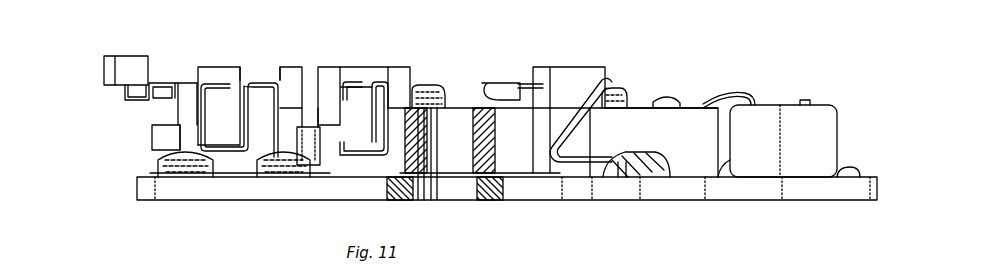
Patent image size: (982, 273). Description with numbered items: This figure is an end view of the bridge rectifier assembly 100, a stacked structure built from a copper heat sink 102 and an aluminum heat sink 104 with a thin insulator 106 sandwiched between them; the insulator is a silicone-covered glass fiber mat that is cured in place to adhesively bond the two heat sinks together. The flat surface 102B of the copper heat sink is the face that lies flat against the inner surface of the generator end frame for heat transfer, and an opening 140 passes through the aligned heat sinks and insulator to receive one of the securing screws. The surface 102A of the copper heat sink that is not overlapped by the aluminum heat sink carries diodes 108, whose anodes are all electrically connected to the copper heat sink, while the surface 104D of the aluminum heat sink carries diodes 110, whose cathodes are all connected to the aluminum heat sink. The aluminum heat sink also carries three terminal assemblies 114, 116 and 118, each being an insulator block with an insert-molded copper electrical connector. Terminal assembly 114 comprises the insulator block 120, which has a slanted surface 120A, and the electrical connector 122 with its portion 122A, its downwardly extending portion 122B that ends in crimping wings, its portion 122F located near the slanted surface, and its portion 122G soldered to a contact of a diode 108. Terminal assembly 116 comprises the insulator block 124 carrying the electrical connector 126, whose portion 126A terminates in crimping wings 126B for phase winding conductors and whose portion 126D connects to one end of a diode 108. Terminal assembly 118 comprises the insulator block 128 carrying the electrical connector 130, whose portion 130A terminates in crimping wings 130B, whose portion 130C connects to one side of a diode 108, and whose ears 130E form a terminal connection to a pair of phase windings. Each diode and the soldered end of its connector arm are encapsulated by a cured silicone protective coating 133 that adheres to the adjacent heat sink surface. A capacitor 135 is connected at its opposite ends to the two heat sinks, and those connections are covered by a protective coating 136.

The bridge rectifier assembly 100 is at (528, 204).
The copper heat sink 102 is at (818, 190).
The surface of copper heat sink 102A is at (733, 157).
The flat surface of copper heat sink 102B is at (735, 202).
The aluminum heat sink 104 is at (440, 126).
The surface of aluminum heat sink 104D is at (478, 130).
The thin insulator 106 is at (720, 176).
The diode 108 is at (183, 178).
The diode 110 is at (414, 85).
The terminal assembly 114 is at (575, 66).
The terminal assembly 116 is at (356, 82).
The terminal assembly 118 is at (248, 60).
The insulator block 120 is at (565, 60).
The slanted surface of insulator 120A is at (573, 122).
The electrical connector 122 is at (498, 108).
The portion of connector 122A is at (512, 82).
The downwardly extending portion of connector 122B is at (493, 87).
The portion of connector 122F is at (618, 90).
The portion of connector 122G is at (614, 165).
The insulator block 124 is at (358, 57).
The electrical connector 126 is at (323, 87).
The portion of connector 126A is at (345, 120).
The crimping wings 126B is at (337, 138).
The portion of connector 126D is at (365, 165).
The insulator block 128 is at (243, 65).
The electrical connector 130 is at (190, 97).
The portion of connector 130A is at (183, 112).
The crimping wings 130B is at (160, 148).
The portion of connector 130C is at (235, 158).
The ears 130E is at (110, 62).
The protective coating 133 is at (163, 168).
The capacitor 135 is at (813, 118).
The protective coating 136 is at (726, 96).
The opening 140 is at (462, 182).